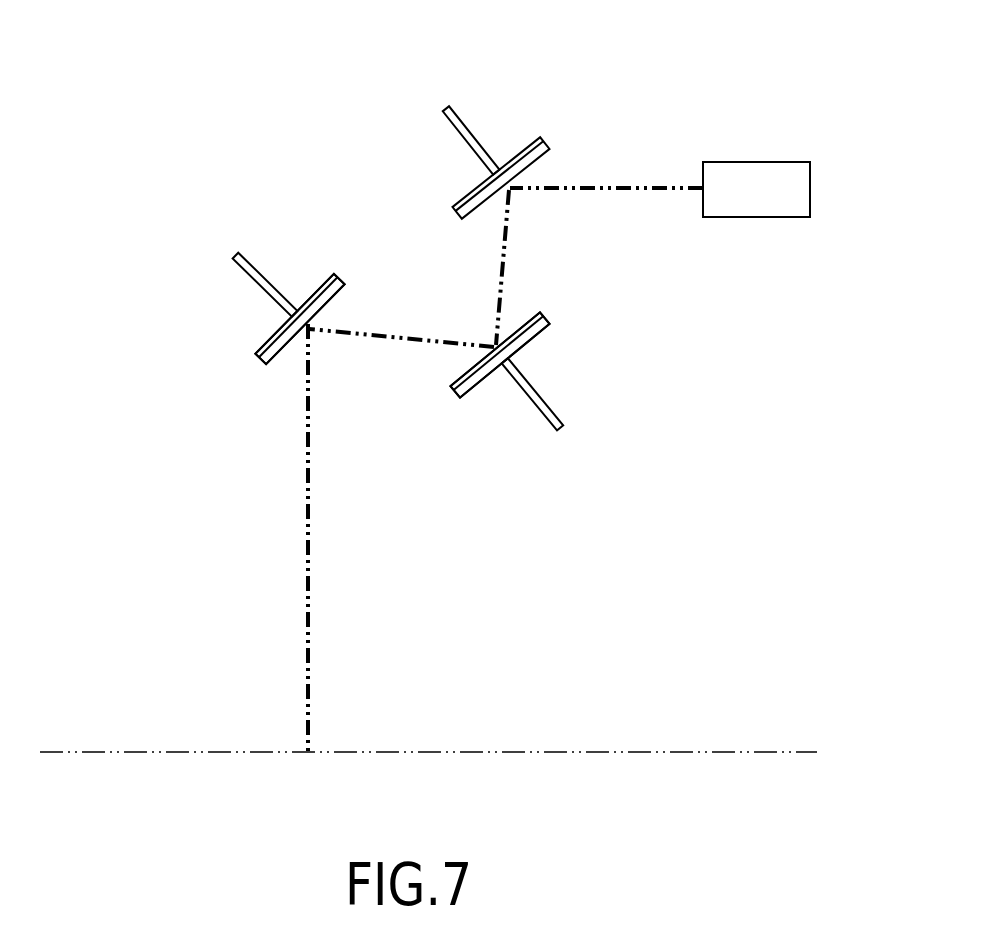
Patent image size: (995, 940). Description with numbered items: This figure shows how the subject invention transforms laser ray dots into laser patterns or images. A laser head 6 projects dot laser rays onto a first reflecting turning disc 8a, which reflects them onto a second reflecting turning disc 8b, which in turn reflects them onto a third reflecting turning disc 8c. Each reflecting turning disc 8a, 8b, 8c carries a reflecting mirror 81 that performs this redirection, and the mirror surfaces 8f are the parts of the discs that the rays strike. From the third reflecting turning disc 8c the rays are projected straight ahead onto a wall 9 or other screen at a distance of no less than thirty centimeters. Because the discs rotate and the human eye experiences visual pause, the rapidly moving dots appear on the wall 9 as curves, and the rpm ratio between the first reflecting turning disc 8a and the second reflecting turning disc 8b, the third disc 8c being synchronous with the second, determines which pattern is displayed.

The laser head 6 is at (745, 163).
The first reflecting turning disc 8a is at (545, 138).
The second reflecting turning disc 8b is at (538, 348).
The third reflecting turning disc 8c is at (262, 338).
The reflecting mirror 81 is at (560, 155).
The reflecting surface of mirror 8f is at (527, 313).
The wall 9 is at (554, 752).